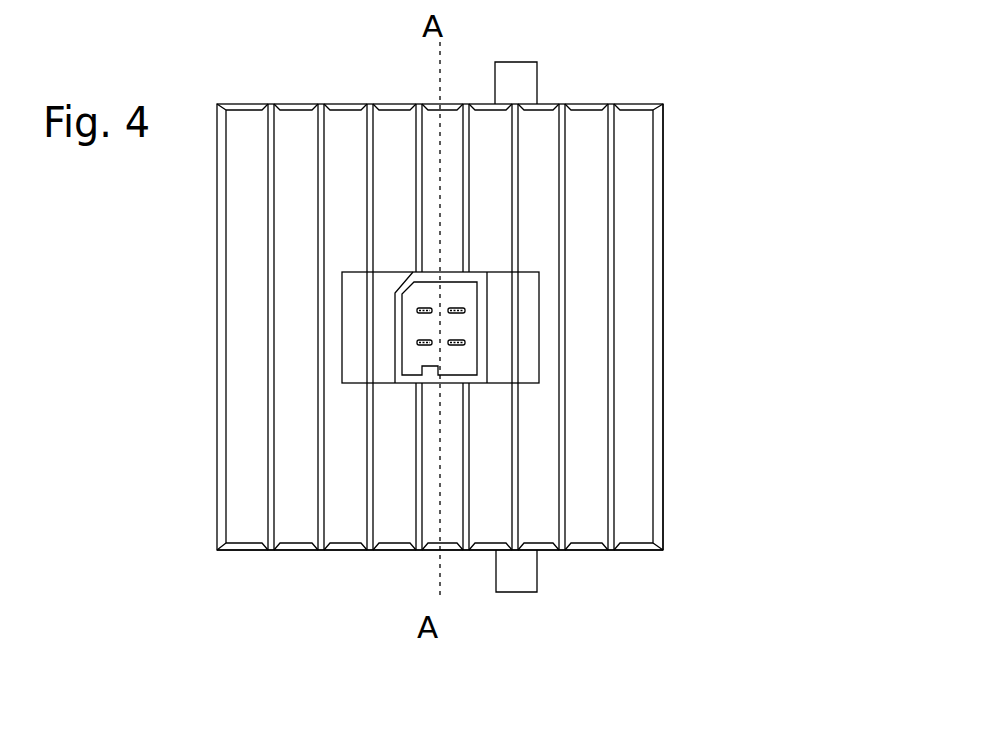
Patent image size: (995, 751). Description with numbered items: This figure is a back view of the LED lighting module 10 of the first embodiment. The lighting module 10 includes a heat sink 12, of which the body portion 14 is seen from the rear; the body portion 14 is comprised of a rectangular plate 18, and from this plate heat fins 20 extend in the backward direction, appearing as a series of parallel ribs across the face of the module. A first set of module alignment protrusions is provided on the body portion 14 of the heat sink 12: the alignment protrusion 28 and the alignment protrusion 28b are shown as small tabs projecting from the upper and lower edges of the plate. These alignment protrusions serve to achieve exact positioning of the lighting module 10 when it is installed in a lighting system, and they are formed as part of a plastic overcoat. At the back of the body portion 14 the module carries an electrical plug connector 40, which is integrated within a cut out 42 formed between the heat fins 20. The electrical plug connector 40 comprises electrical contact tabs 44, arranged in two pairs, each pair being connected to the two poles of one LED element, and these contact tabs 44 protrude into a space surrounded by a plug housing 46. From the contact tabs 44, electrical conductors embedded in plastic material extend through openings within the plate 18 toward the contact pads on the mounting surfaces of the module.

The LED lighting module 10 is at (710, 80).
The heat sink 12 is at (745, 171).
The body portion 14 is at (663, 378).
The rectangular plate 18 is at (587, 550).
The heat fins 20 is at (345, 135).
The alignment protrusion 28 is at (527, 85).
The alignment protrusion 28b is at (532, 585).
The electrical plug connector 40 is at (333, 298).
The cut out 42 is at (528, 322).
The electrical contact tabs 44 is at (427, 309).
The plug housing 46 is at (402, 358).